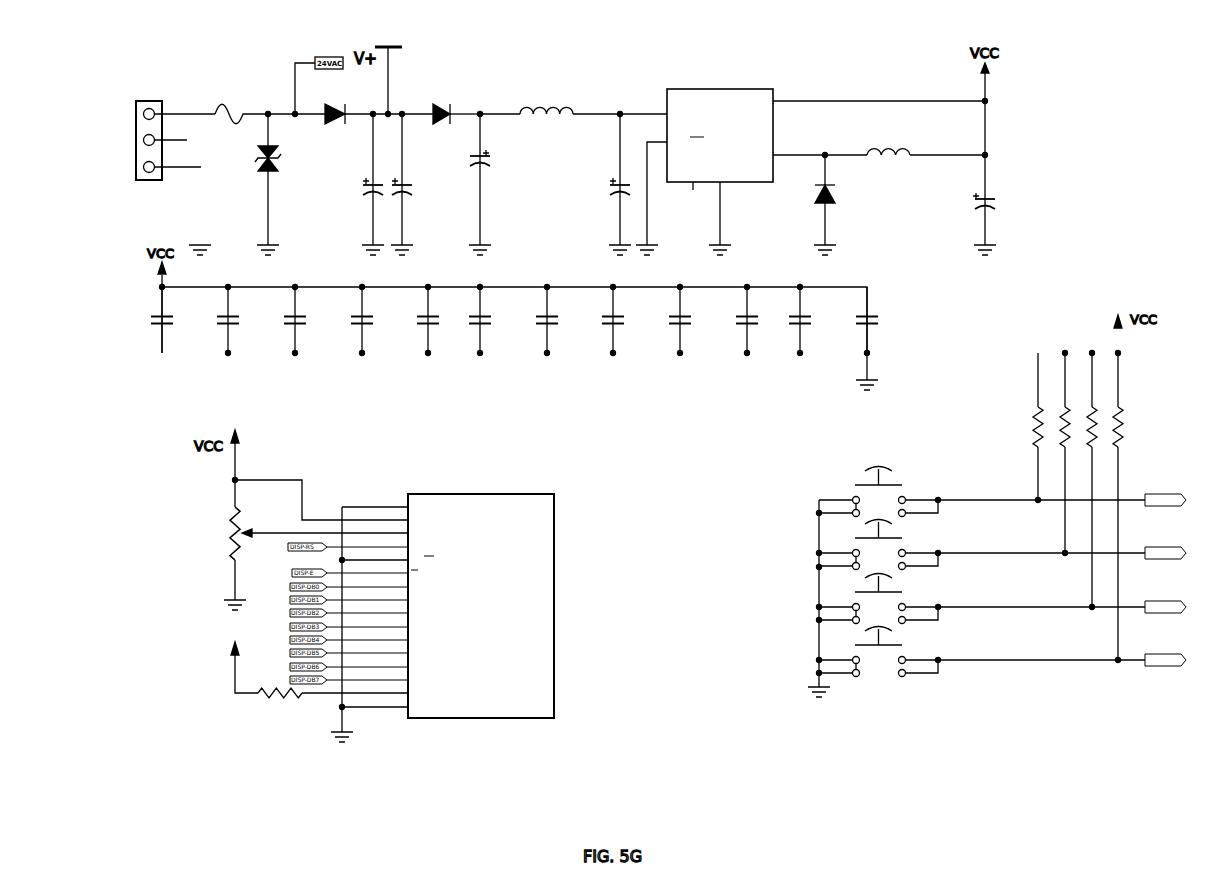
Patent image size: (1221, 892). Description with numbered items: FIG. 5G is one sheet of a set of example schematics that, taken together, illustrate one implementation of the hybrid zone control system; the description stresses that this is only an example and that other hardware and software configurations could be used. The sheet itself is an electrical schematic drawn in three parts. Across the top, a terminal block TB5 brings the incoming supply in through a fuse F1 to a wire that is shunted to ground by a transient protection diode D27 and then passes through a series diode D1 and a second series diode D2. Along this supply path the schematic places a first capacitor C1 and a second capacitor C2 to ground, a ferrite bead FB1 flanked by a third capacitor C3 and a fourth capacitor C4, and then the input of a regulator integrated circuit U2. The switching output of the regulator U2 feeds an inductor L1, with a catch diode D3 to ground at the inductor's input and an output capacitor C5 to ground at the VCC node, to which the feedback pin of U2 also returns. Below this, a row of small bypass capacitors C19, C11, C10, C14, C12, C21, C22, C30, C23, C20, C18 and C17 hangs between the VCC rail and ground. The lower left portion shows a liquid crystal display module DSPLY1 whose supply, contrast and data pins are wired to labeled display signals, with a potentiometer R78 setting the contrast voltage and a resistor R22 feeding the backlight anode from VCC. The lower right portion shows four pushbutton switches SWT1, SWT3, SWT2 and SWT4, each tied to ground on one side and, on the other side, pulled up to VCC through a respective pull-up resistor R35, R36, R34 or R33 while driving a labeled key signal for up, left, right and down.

The terminal block TB5 is at (169, 146).
The fuse 2.5A Raychem RUE250 F1 is at (228, 93).
The TVS diode SMCJ45CA D27 is at (243, 184).
The diode US1GDI D1 is at (364, 115).
The diode US1GDI D2 is at (443, 115).
The capacitor 330uF 50V C1 is at (429, 184).
The capacitor 330uF 50V C2 is at (344, 184).
The capacitor 330uF 50V C3 is at (508, 184).
The capacitor 100uF 50V C4 is at (559, 184).
The ferrite bead LF1206C202R-10 FB1 is at (573, 110).
The voltage regulator LM2594HVM-5 U2 is at (712, 146).
The inductor 150uH L1 is at (879, 134).
The diode B160DI D3 is at (792, 204).
The capacitor 100uF 50V C5 is at (917, 202).
The capacitor .1uF C19 is at (180, 319).
The capacitor .1uF C11 is at (246, 320).
The capacitor .1uF C10 is at (313, 320).
The capacitor .1uF C14 is at (380, 320).
The capacitor .1uF C12 is at (446, 320).
The capacitor .1uF C21 is at (498, 320).
The capacitor .1uF C22 is at (565, 320).
The capacitor .1uF C30 is at (631, 320).
The capacitor .1uF C23 is at (698, 320).
The capacitor .1uF C20 is at (765, 320).
The capacitor .1uF C18 is at (818, 320).
The capacitor .1uF C17 is at (885, 338).
The potentiometer 10K R78 is at (293, 550).
The resistor 680 ohm R22 is at (301, 692).
The LCD display LCM-S01601 DSPLY1 is at (469, 597).
The resistor 10K R35 is at (1047, 426).
The resistor 10K R36 is at (1074, 452).
The resistor 10K R34 is at (1101, 479).
The resistor 10K R33 is at (1127, 506).
The switch KEY_UP SWT1 is at (1002, 490).
The switch KEY_LEFT SWT3 is at (1002, 543).
The switch KEY_RIGHT SWT2 is at (1003, 597).
The switch KEY_DOWN SWT4 is at (1003, 650).